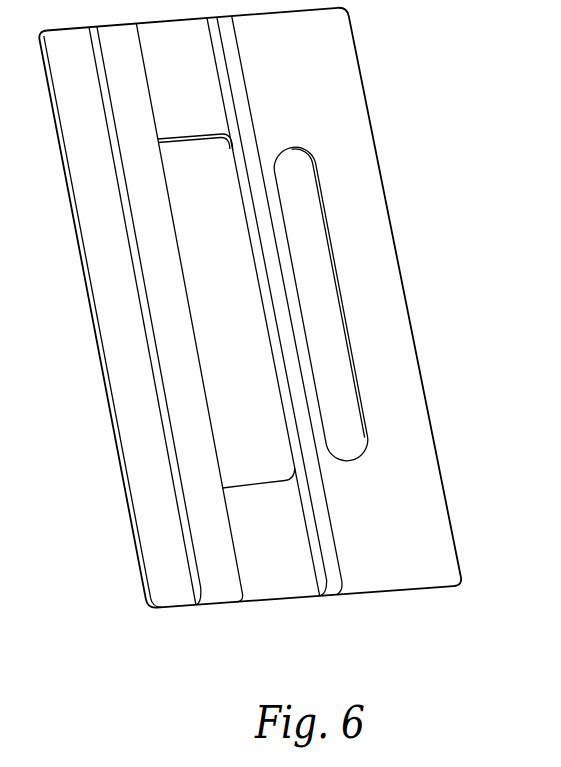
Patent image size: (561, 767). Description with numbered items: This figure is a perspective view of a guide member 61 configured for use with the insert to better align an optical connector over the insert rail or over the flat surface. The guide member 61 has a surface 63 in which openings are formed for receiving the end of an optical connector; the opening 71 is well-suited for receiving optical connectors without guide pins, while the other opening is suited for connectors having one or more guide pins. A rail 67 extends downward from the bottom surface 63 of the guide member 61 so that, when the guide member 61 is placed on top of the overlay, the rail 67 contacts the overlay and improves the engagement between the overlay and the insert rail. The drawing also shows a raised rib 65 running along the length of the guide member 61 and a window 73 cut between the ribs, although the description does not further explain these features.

The guide member 61 is at (409, 197).
The surface 63 is at (194, 76).
The raised rib 65 is at (141, 152).
The rail 67 is at (241, 128).
The opening 71 is at (329, 294).
The window 73 is at (244, 356).